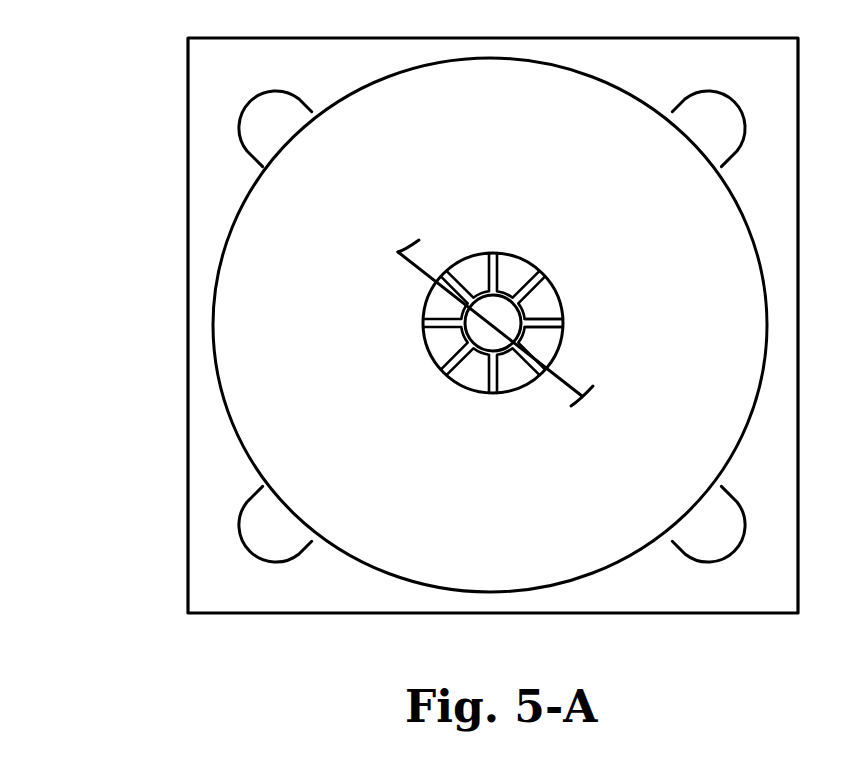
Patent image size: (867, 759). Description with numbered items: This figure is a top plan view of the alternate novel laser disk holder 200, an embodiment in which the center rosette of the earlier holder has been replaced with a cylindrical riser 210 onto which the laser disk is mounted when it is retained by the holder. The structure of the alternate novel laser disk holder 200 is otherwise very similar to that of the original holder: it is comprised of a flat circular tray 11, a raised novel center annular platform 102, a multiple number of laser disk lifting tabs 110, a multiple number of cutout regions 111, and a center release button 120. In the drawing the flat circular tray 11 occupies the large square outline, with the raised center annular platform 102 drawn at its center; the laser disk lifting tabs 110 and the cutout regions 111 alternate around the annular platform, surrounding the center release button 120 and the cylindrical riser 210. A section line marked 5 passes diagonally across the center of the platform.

The alternate novel laser disk holder 200 is at (150, 190).
The flat circular tray 11 is at (332, 322).
The raised novel center annular platform 102 is at (447, 380).
The center release button 120 is at (491, 311).
The laser disk lifting tabs 110 is at (522, 270).
The cylindrical riser 210 is at (514, 368).
The cutout regions 111 is at (559, 323).
The section line 5- 5 is at (496, 323).